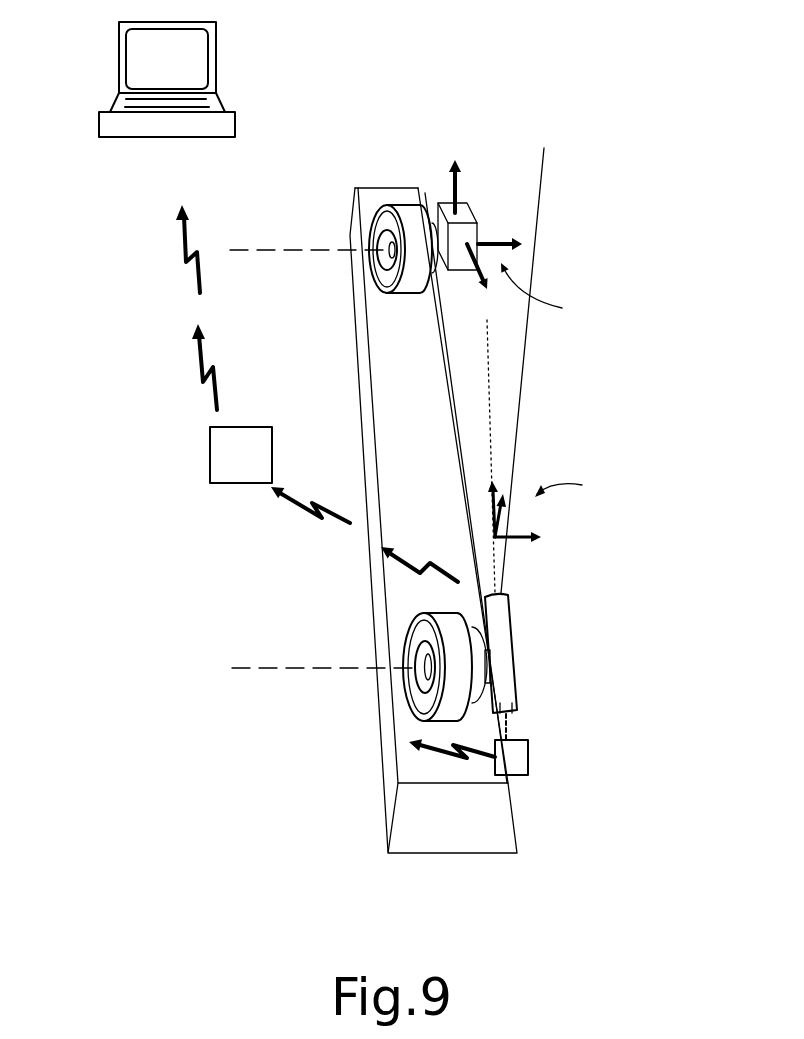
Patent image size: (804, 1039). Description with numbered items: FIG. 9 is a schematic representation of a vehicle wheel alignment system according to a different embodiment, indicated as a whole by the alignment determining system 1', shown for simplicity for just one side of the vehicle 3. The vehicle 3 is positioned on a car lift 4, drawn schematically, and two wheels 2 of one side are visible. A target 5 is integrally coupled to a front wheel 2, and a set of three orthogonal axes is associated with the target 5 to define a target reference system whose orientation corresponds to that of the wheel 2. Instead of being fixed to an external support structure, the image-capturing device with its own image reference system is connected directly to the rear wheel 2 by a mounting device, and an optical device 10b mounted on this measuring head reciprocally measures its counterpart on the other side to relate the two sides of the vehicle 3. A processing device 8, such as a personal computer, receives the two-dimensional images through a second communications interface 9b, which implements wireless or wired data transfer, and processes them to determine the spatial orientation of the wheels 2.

The processing device 8 is at (220, 118).
The car lift 4 is at (467, 842).
The vehicle 3 is at (265, 655).
The wheel 2 is at (398, 308).
The target 5 is at (466, 215).
The alignment determining system 1' is at (582, 409).
The second communications interface 9b is at (228, 475).
The optical device 10b is at (515, 755).